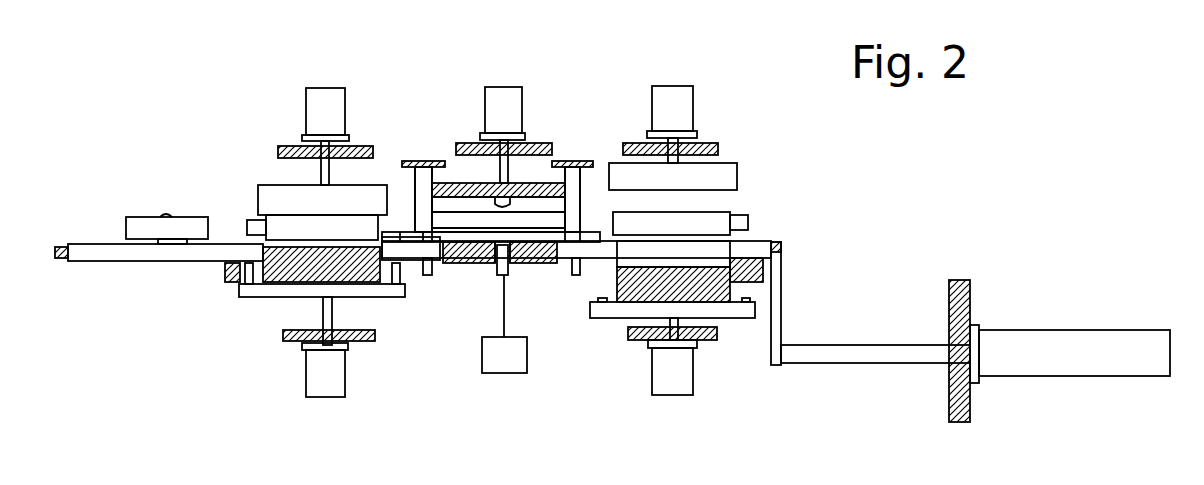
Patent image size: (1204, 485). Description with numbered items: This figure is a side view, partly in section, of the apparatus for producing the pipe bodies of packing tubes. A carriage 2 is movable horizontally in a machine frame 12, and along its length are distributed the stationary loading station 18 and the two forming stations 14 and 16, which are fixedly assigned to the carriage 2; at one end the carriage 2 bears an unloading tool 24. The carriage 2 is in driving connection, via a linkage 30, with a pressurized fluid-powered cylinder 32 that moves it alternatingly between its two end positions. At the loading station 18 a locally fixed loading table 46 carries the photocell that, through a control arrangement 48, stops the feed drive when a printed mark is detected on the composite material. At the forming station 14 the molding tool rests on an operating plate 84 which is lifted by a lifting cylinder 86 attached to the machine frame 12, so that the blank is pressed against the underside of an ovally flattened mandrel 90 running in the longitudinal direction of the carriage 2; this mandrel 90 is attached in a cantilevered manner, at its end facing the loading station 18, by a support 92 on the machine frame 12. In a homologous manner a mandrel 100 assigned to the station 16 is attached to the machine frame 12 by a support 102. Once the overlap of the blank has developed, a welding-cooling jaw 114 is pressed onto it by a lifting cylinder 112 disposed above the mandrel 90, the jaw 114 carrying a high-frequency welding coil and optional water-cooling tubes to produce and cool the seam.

The carriage 2 is at (158, 268).
The machine frame 12 is at (423, 162).
The forming station 14 is at (375, 302).
The forming station 16 is at (610, 268).
The loading station 18 is at (537, 122).
The unloading tool 24 is at (140, 213).
The linkage 30 is at (781, 315).
The pressurized fluid-powered cylinder 32 is at (1018, 328).
The loading table 46 is at (468, 264).
The control arrangement 48 is at (518, 364).
The operating plate 84 is at (249, 298).
The lifting cylinder 86 is at (310, 383).
The mandrel 90 is at (245, 222).
The support 92 is at (413, 188).
The mandrel 100 is at (743, 218).
The support 102 is at (575, 190).
The lifting cylinder 112 is at (305, 102).
The welding-cooling jaw 114 is at (275, 183).